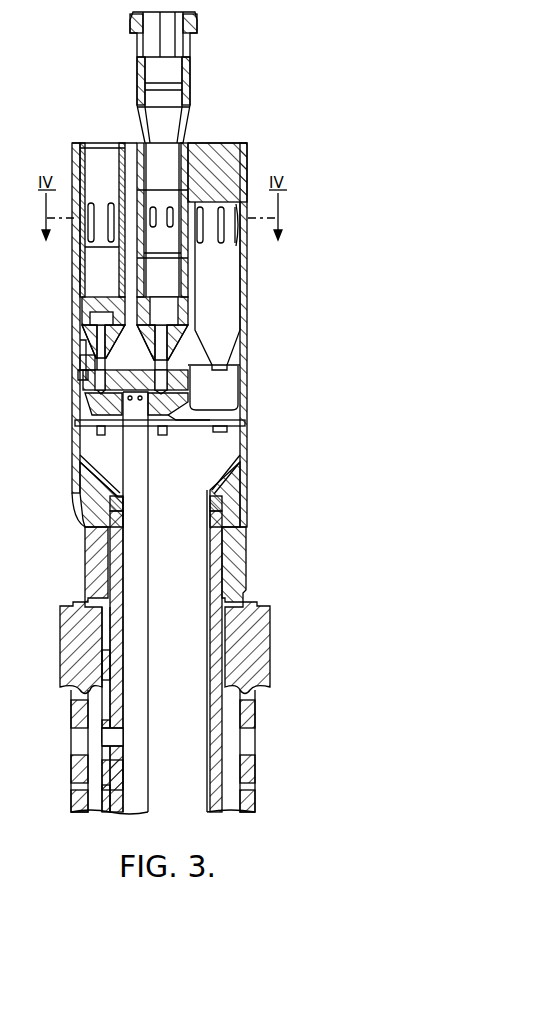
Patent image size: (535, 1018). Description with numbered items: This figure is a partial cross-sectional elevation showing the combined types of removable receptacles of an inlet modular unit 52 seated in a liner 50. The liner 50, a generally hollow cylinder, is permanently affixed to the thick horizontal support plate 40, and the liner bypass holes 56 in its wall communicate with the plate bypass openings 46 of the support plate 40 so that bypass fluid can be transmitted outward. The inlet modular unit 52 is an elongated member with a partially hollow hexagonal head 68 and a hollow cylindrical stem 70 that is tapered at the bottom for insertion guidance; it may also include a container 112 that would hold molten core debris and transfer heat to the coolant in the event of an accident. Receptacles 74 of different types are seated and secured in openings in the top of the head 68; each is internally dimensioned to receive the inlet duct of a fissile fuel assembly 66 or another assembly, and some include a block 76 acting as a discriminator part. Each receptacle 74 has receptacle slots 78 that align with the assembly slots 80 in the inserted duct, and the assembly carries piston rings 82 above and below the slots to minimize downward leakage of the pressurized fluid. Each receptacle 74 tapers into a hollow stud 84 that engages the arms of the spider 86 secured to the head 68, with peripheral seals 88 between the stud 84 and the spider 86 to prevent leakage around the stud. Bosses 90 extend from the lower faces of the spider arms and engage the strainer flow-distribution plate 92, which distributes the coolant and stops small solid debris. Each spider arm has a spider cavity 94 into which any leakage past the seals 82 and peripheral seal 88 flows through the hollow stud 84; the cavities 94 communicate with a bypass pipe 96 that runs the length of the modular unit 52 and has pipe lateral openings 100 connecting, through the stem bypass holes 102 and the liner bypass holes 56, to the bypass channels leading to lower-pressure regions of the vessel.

The horizontal support plate 40 is at (270, 630).
The plate bypass openings 46 is at (71, 765).
The liner 50 is at (247, 568).
The inlet modular unit 52 is at (240, 515).
The liner bypass holes 56 is at (102, 735).
The fissile fuel assembly 66 is at (194, 68).
The hexagonal head 68 is at (76, 152).
The hollow cylindrical stem 70 is at (210, 585).
The receptacle 74 is at (230, 287).
The block 76 is at (88, 300).
The receptacle slots 78 is at (217, 247).
The assembly slots 80 is at (172, 225).
The piston rings 82 is at (167, 188).
The hollow stud 84 is at (80, 355).
The spider 86 is at (212, 395).
The peripheral seals 88 is at (167, 385).
The bosses 90 is at (176, 412).
The strainer flow-distribution plate 92 is at (240, 424).
The spider cavity 94 is at (86, 412).
The bypass pipe 96 is at (148, 505).
The pipe lateral openings 100 is at (123, 748).
The stem bypass holes 102 is at (117, 735).
The container 112 is at (207, 563).